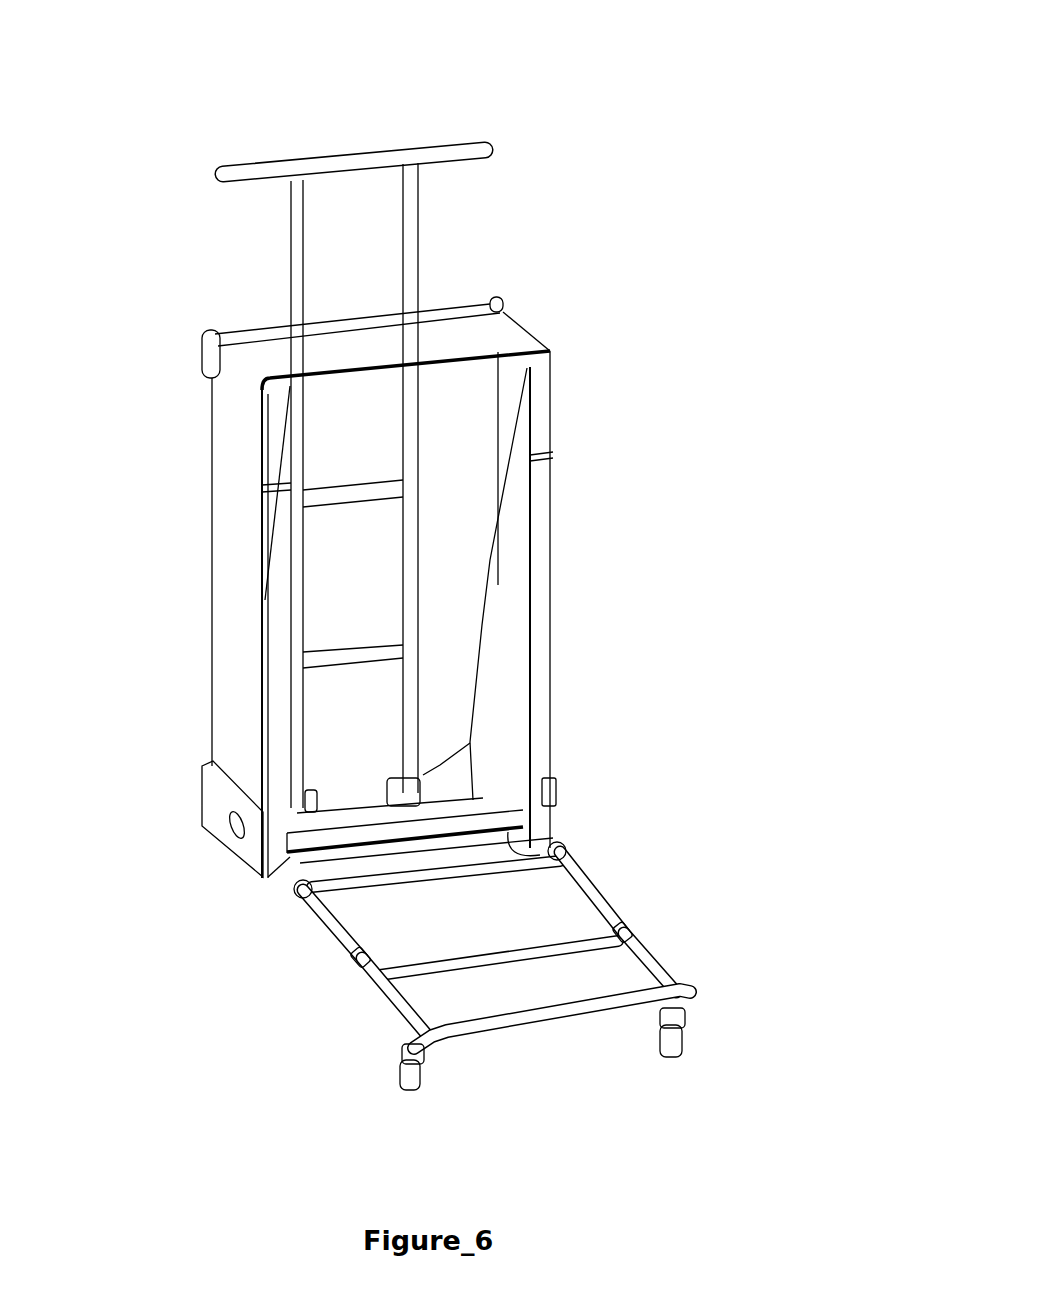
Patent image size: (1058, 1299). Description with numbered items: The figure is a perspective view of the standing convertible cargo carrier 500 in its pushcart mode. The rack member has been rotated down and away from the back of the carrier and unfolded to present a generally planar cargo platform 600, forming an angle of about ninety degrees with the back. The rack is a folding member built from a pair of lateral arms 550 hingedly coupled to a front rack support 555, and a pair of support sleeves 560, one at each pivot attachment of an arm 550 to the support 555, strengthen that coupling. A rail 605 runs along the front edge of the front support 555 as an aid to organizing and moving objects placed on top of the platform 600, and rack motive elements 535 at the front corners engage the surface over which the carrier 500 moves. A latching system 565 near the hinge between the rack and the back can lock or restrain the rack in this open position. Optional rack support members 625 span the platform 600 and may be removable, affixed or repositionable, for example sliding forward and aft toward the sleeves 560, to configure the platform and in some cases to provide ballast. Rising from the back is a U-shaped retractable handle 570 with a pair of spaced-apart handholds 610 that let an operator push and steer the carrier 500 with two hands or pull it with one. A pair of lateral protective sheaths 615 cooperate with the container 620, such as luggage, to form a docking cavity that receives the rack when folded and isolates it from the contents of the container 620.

The standing convertible cargo carrier 500 is at (740, 44).
The rack motive element 535 is at (405, 1085).
The lateral arm 550 is at (296, 878).
The front rack support 555 is at (650, 968).
The support sleeve 560 is at (338, 940).
The latching system 565 is at (556, 790).
The retractable handle 570 is at (348, 156).
The cargo platform 600 is at (482, 922).
The rail 605 is at (562, 1012).
The handhold 610 is at (226, 168).
The lateral protective sheath 615 is at (280, 605).
The container 620 is at (405, 361).
The rack support member 625 is at (395, 880).